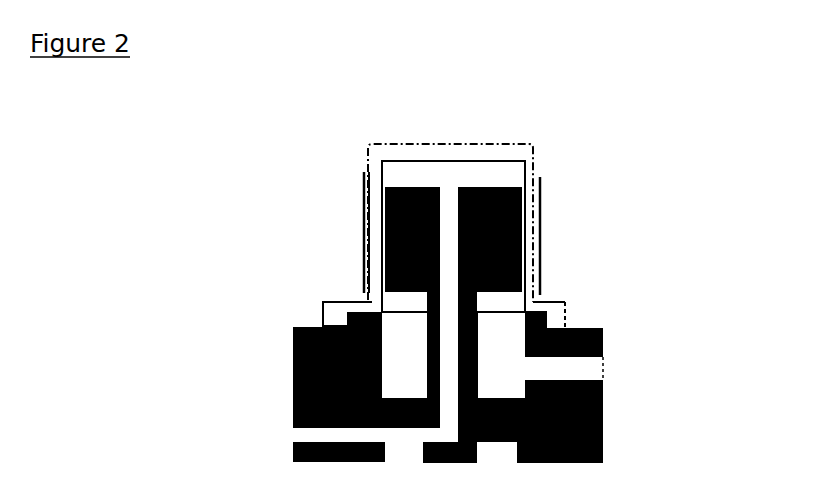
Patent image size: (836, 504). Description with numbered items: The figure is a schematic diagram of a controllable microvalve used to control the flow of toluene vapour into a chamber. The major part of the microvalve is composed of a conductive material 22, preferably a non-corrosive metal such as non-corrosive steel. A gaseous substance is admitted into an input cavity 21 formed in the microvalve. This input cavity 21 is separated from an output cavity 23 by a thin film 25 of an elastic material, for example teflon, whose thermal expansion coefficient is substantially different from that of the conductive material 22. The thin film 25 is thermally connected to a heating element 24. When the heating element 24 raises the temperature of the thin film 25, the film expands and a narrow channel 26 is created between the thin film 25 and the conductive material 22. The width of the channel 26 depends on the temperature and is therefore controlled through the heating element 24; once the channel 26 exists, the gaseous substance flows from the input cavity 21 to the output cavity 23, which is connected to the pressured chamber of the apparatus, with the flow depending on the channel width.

The input cavity 21 is at (296, 436).
The conductive material 22 is at (603, 420).
The output cavity 23 is at (593, 368).
The heating element 24 is at (540, 230).
The thin film 25 is at (513, 153).
The narrow channel 26 is at (522, 257).